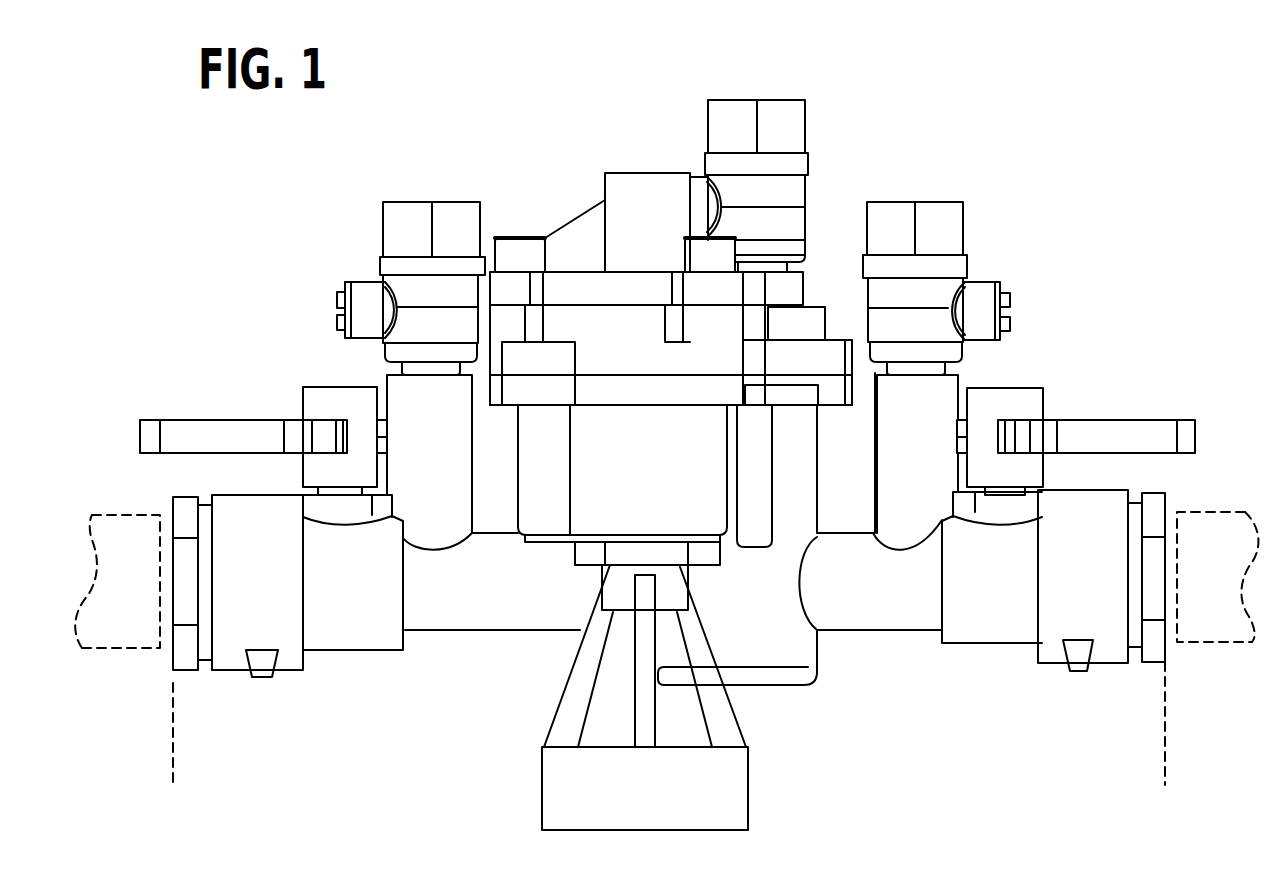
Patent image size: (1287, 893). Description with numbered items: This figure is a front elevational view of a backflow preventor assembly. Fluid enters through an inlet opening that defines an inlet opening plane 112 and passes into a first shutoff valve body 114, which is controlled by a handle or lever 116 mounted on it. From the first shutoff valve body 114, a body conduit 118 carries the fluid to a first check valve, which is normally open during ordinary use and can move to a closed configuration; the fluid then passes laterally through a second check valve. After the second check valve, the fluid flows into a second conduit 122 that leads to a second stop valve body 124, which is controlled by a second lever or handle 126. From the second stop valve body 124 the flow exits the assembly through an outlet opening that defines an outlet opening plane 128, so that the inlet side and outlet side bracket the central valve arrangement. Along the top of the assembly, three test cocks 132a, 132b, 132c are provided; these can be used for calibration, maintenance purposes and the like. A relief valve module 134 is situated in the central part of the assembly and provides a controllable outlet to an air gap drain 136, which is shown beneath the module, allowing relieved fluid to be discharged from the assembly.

The inlet opening plane 112 is at (183, 743).
The first shutoff valve body 114 is at (375, 597).
The handle or lever 116 is at (192, 427).
The body conduit 118 is at (495, 597).
The second conduit 122 is at (893, 597).
The second stop valve body 124 is at (1020, 597).
The second lever or handle 126 is at (1160, 432).
The outlet opening plane 128 is at (1170, 755).
The test cock 132a is at (398, 230).
The test cock 132b is at (792, 120).
The test cock 132c is at (948, 217).
The relief valve module 134 is at (635, 353).
The air gap drain 136 is at (575, 688).